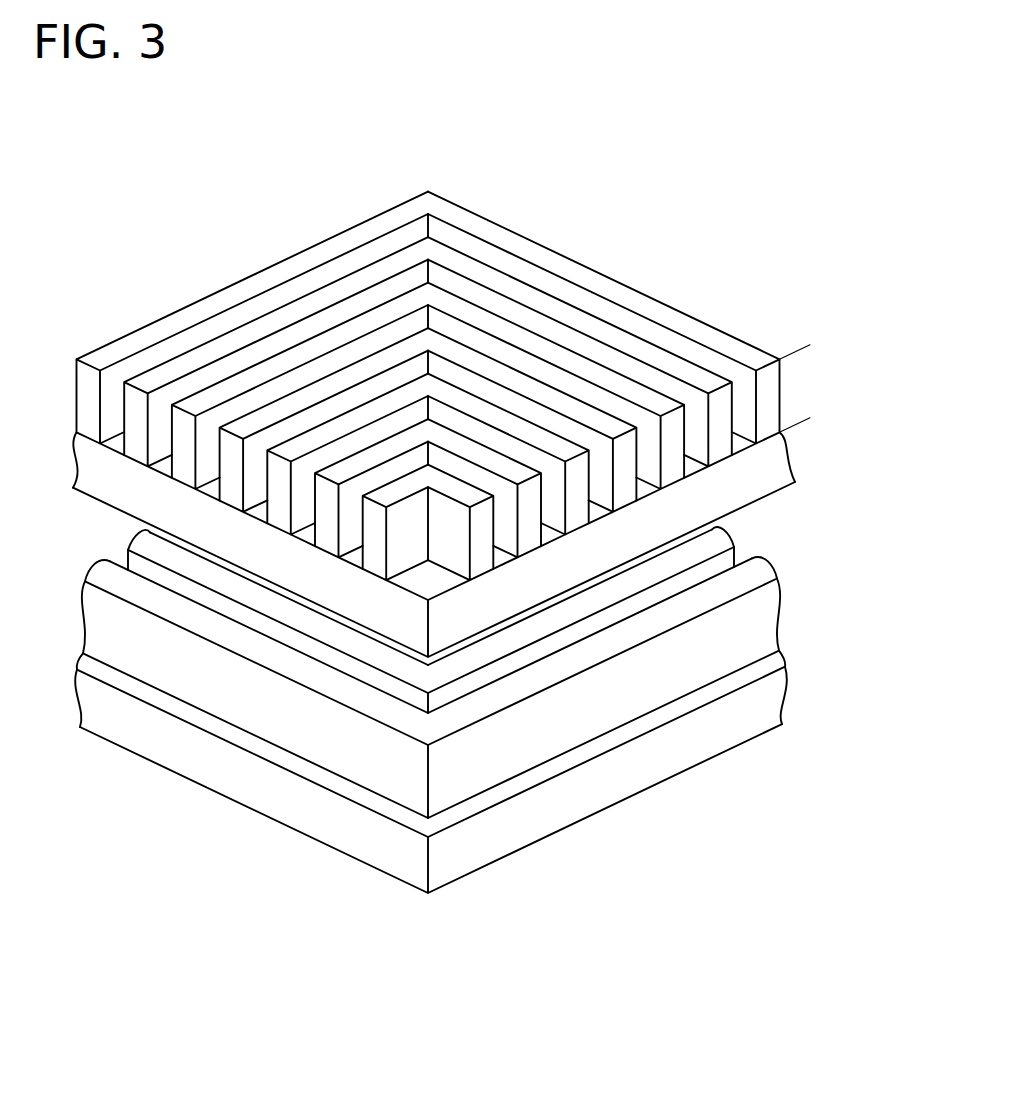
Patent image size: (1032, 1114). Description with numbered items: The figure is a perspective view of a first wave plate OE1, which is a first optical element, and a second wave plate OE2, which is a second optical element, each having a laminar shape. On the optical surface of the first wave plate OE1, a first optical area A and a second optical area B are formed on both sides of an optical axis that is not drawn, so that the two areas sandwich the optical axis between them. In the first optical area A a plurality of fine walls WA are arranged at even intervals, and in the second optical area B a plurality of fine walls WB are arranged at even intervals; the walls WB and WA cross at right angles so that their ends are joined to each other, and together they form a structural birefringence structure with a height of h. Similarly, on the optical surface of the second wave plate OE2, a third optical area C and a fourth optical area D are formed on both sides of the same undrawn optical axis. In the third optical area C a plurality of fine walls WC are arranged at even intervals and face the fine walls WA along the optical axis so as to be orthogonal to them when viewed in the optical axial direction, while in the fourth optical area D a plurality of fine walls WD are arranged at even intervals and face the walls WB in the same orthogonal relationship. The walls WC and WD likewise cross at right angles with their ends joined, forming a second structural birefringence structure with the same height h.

The first wave plate OE1 is at (478, 394).
The second wave plate OE2 is at (474, 738).
The first optical area A is at (233, 366).
The second optical area B is at (622, 366).
The third optical area C is at (229, 740).
The fourth optical area D is at (629, 738).
The fine walls WA is at (253, 396).
The fine walls WB is at (604, 396).
The fine walls WC is at (251, 684).
The fine walls WD is at (575, 663).
The height h is at (800, 350).